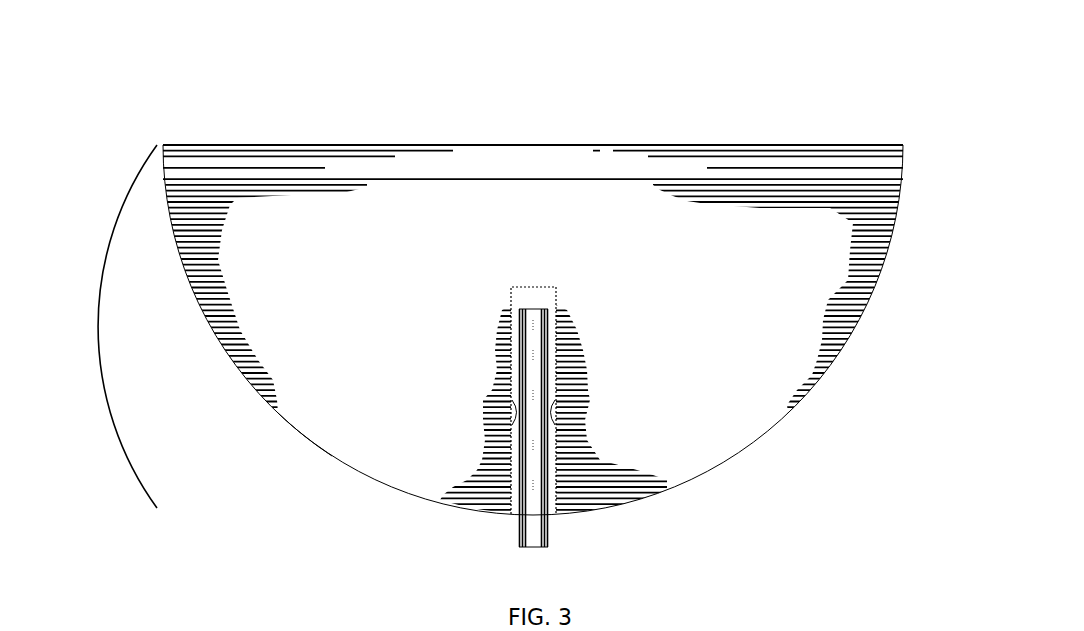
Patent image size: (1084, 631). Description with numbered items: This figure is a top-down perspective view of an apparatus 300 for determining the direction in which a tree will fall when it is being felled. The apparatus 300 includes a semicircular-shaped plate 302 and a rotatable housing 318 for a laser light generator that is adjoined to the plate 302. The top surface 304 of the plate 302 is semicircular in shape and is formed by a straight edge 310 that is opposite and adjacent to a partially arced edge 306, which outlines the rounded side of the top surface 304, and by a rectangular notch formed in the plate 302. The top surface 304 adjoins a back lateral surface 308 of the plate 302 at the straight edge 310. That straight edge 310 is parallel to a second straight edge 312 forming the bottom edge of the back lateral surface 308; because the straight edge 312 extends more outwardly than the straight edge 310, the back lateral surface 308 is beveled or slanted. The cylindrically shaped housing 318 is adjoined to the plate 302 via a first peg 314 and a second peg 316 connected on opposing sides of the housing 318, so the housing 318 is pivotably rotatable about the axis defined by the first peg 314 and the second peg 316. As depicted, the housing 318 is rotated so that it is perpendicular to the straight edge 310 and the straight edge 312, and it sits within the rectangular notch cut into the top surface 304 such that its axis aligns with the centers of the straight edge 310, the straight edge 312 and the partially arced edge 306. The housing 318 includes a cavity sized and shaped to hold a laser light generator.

The apparatus 300 is at (735, 101).
The plate 302 is at (99, 317).
The top surface 304 is at (305, 410).
The partially arced edge 306 is at (557, 300).
The back lateral surface 308 is at (507, 168).
The straight edge 310 is at (447, 180).
The straight edge 312 is at (420, 147).
The first peg 314 is at (546, 412).
The second peg 316 is at (520, 412).
The rotatable housing 318 is at (548, 527).